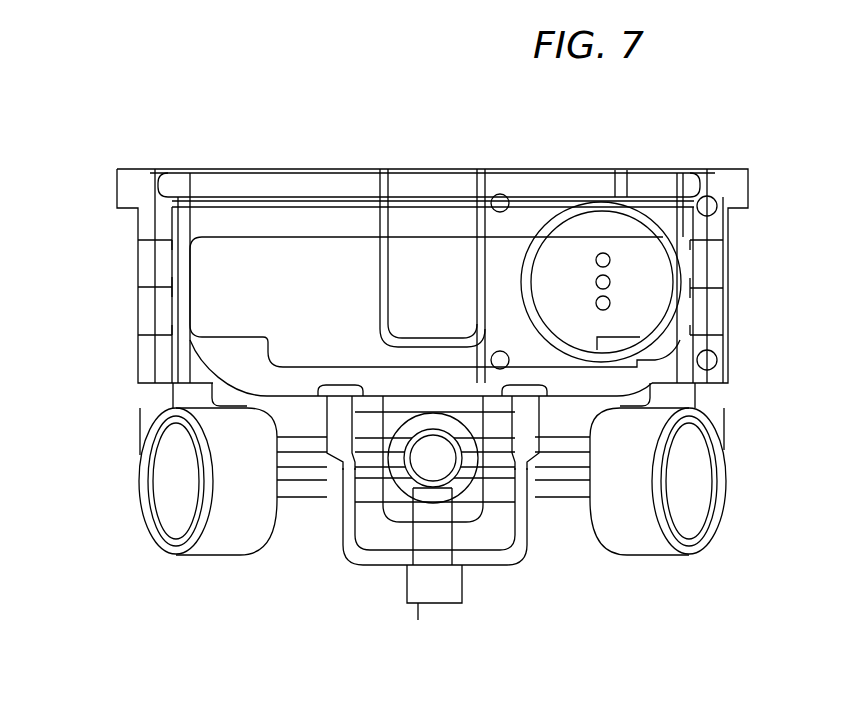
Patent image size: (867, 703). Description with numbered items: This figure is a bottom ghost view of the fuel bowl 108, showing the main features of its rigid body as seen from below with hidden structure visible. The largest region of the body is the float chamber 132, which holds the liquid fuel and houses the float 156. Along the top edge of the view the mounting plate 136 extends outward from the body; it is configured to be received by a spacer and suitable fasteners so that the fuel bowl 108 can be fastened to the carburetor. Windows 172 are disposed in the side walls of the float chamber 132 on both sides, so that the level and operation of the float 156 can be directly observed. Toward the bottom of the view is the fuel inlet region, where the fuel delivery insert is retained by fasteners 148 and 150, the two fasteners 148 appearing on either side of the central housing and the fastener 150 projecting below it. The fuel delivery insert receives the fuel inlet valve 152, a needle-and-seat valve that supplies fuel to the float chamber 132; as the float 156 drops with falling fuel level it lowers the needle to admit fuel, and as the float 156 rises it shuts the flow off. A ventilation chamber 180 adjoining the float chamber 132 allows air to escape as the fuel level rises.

The fuel bowl 108 is at (133, 106).
The float chamber 132 is at (262, 212).
The mounting plate 136 is at (642, 182).
The fastener 148 is at (333, 457).
The fastener 150 is at (433, 458).
The fuel inlet valve 152 is at (403, 490).
The float 156 is at (360, 250).
The windows 172 is at (150, 272).
The ventilation chamber 180 is at (450, 220).